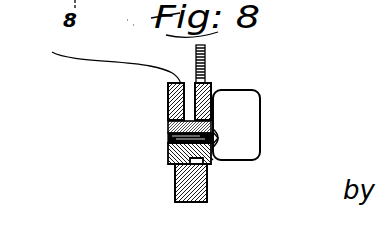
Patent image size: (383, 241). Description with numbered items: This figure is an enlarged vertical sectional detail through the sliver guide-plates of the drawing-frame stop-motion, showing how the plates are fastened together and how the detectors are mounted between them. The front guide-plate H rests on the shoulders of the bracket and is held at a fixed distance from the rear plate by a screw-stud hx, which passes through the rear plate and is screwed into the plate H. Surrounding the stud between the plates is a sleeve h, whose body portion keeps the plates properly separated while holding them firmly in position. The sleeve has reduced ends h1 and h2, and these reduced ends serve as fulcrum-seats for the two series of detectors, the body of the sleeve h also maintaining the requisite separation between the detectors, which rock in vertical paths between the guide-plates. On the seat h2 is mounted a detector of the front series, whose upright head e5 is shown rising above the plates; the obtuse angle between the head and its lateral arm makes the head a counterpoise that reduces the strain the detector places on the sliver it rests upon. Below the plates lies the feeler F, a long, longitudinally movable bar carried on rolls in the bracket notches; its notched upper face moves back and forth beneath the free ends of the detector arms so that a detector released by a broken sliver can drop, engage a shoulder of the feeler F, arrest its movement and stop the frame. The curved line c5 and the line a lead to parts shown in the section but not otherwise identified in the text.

The housing a is at (213, 90).
The front guide-plate H is at (170, 100).
The wire c5 is at (109, 60).
The upright head e5 is at (206, 64).
The sleeve h is at (168, 122).
The screw-stud hx is at (170, 136).
The reduced end of sleeve h2 is at (170, 150).
The reduced end of sleeve h1 is at (212, 163).
The feeler F is at (180, 195).